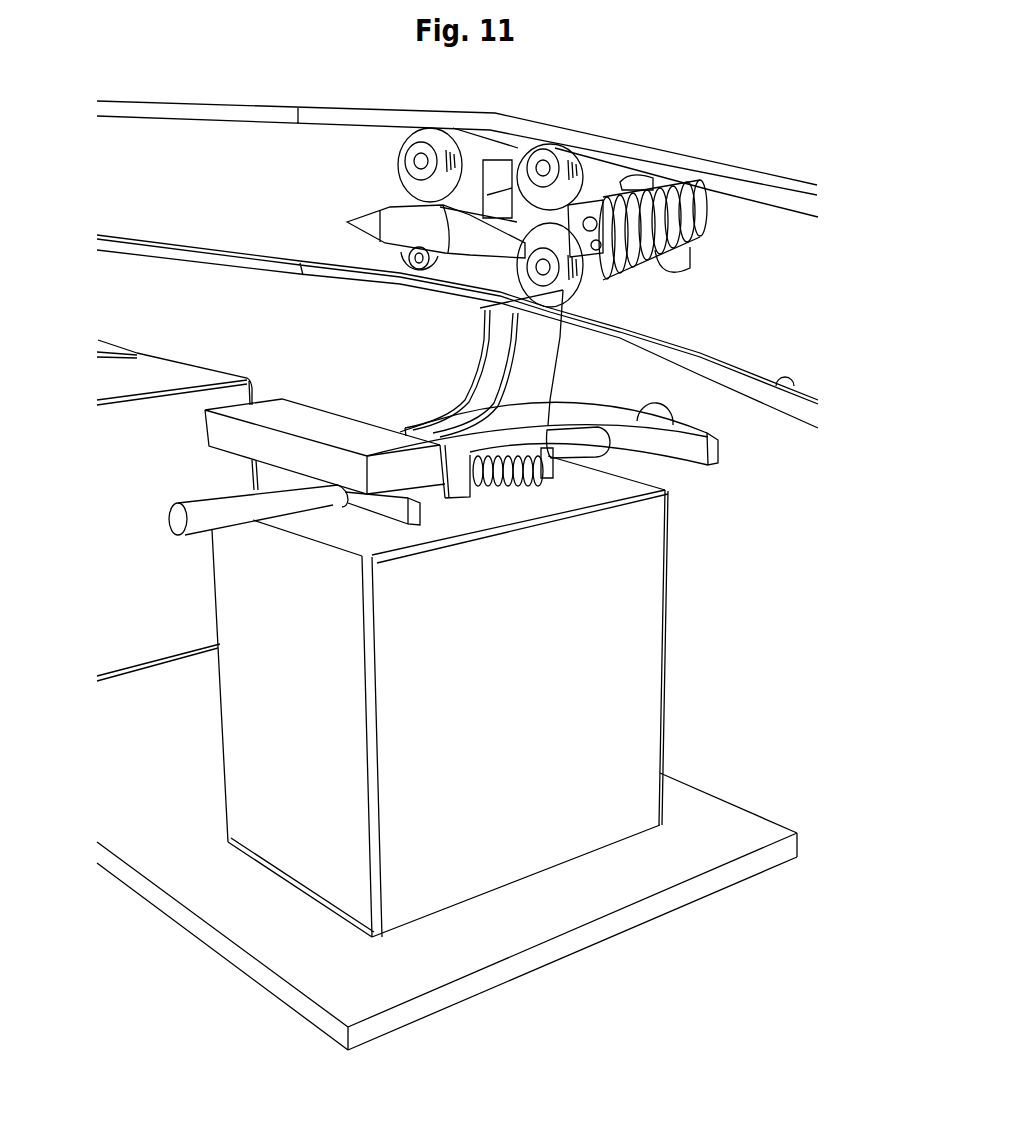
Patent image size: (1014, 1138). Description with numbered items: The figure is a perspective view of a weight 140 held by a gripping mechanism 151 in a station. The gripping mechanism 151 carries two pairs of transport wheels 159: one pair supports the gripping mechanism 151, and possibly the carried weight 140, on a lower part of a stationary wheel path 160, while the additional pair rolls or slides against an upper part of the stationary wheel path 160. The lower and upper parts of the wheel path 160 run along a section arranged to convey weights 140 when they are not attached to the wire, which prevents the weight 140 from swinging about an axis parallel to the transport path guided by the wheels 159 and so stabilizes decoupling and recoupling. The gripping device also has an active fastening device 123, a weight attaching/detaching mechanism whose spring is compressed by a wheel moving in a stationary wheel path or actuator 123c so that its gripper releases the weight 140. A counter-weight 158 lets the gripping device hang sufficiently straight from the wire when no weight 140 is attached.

The fastening device 123 is at (555, 477).
The stationary wheel path or actuator 123c is at (700, 453).
The weight 140 is at (489, 701).
The gripping mechanism 151 is at (715, 248).
The counter-weight 158 is at (367, 495).
The transport wheels 159 is at (400, 258).
The stationary wheel path 160 is at (700, 348).